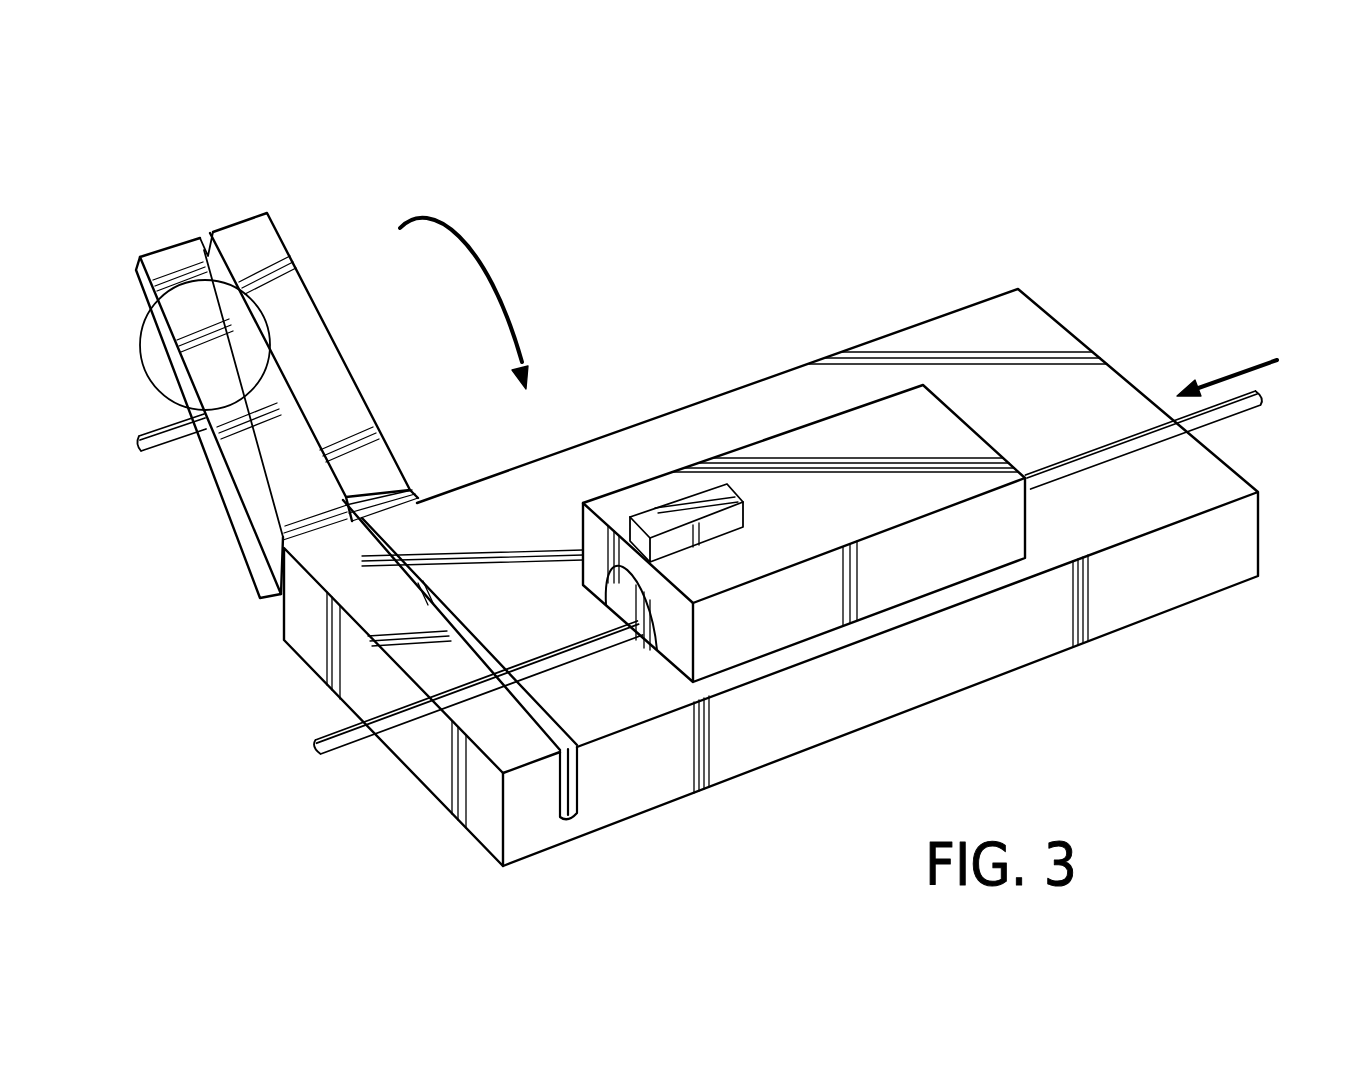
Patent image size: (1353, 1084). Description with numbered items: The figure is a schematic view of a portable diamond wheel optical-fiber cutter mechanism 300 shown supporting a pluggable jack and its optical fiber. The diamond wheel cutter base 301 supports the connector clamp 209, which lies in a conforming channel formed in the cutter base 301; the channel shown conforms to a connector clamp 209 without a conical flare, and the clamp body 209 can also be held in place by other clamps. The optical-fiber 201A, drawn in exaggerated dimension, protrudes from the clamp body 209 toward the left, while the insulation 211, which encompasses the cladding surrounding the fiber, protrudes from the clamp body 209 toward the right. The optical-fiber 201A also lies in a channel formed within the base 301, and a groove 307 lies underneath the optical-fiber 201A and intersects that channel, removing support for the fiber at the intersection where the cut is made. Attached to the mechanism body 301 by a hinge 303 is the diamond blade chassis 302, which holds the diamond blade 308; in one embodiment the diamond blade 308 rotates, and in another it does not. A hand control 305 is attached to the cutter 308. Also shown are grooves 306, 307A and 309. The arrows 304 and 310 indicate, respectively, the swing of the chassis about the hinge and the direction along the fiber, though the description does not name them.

The portable diamond wheel optical-fiber cutter mechanism 300 is at (1042, 213).
The diamond wheel cutter base 301 is at (1012, 645).
The diamond blade chassis 302 is at (286, 282).
The hinge 303 is at (418, 494).
The closing direction arrow 304 is at (455, 228).
The hand control 305 is at (165, 445).
The groove 306 is at (193, 348).
The groove 307 is at (573, 813).
The groove 307A is at (211, 232).
The diamond blade 308 is at (268, 328).
The groove 309 is at (145, 316).
The insertion direction arrow 310 is at (1247, 370).
The connector clamp 209 is at (871, 428).
The optical-fiber 201A is at (336, 754).
The insulation 211 is at (1245, 403).